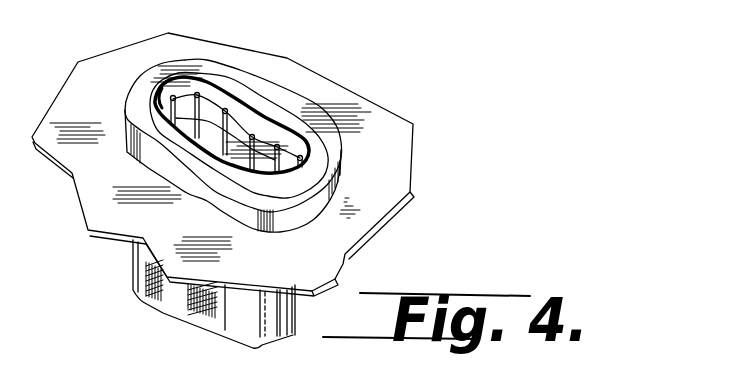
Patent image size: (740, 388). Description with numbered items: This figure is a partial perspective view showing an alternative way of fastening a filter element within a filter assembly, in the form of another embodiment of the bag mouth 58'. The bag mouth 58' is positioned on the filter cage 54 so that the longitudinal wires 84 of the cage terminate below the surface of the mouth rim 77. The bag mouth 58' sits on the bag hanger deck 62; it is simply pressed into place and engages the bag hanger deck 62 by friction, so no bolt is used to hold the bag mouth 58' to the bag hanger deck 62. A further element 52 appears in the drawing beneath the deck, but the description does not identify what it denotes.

The base block 52 is at (203, 313).
The filter cage 54 is at (241, 126).
The bag mouth 58' is at (293, 145).
The bag hanger deck 62 is at (373, 191).
The mouth rim 77 is at (160, 167).
The longitudinal wires 84 is at (237, 133).